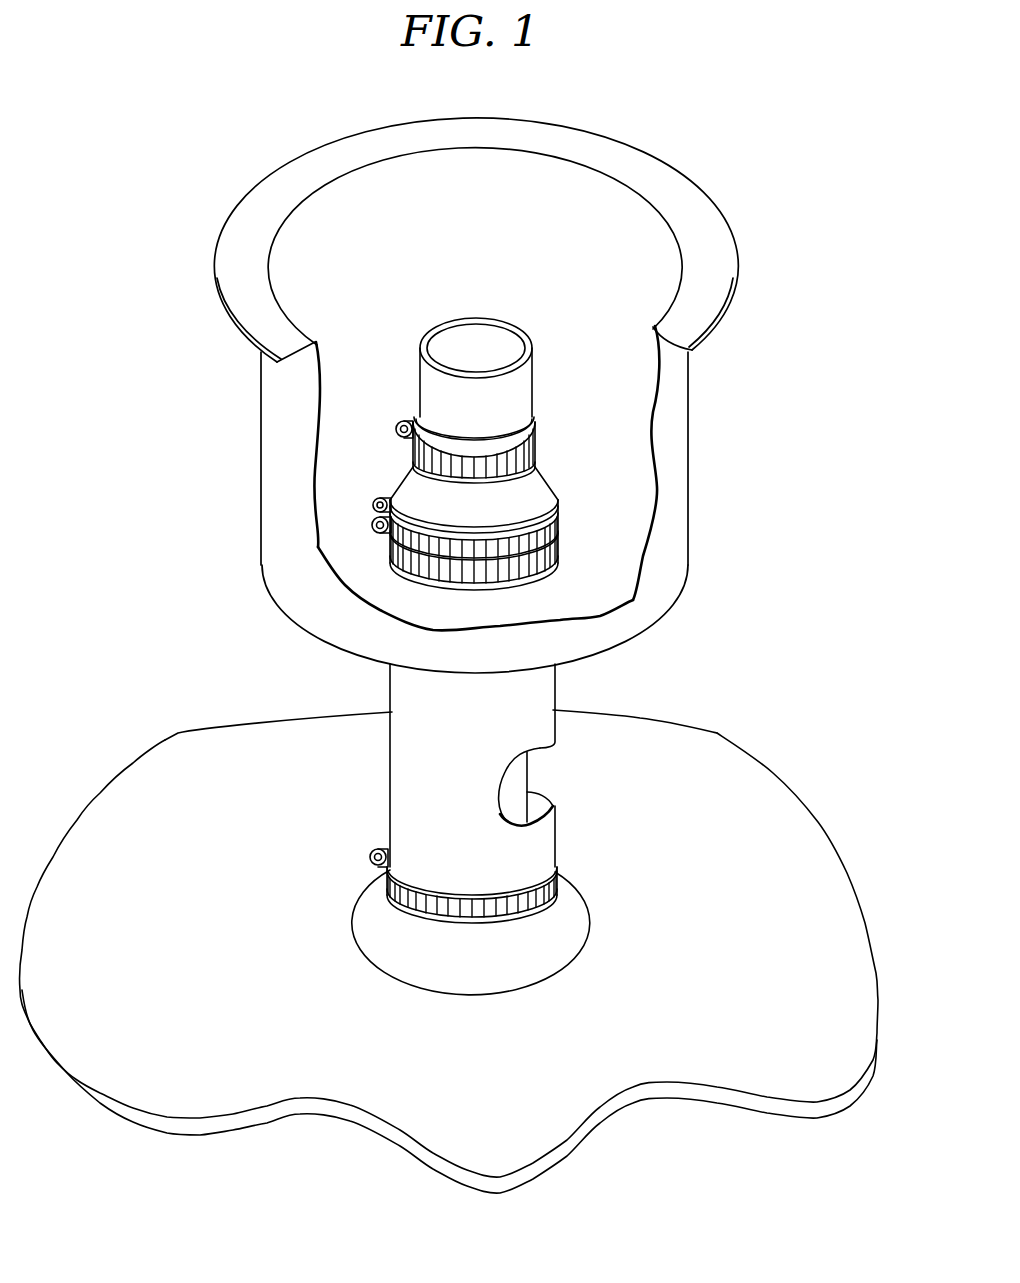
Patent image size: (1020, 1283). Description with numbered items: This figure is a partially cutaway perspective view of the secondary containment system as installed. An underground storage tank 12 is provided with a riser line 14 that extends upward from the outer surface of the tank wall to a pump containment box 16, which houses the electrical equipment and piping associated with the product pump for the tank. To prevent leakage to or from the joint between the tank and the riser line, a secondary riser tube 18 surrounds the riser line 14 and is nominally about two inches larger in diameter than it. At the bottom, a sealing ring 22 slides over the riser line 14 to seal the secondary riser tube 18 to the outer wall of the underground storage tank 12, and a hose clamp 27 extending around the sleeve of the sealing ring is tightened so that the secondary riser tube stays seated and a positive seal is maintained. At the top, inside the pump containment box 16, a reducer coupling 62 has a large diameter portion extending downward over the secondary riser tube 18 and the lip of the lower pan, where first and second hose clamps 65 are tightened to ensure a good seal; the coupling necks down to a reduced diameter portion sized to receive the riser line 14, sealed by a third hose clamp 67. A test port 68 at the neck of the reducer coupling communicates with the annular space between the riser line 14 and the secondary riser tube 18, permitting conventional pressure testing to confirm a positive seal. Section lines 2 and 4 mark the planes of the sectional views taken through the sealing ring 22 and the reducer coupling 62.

The underground storage tank 12 is at (767, 843).
The riser line 14 is at (522, 781).
The pump containment box 16 is at (673, 450).
The secondary riser tube 18 is at (417, 685).
The sealing ring 22 is at (553, 927).
The hose clamp 27 is at (370, 864).
The reducer coupling 62 is at (537, 437).
The first and second hose clamps 65 is at (376, 504).
The third hose clamp 67 is at (404, 434).
The test port 68 is at (645, 612).
The section line 2- 2 is at (383, 840).
The section line 4- 4 is at (407, 477).